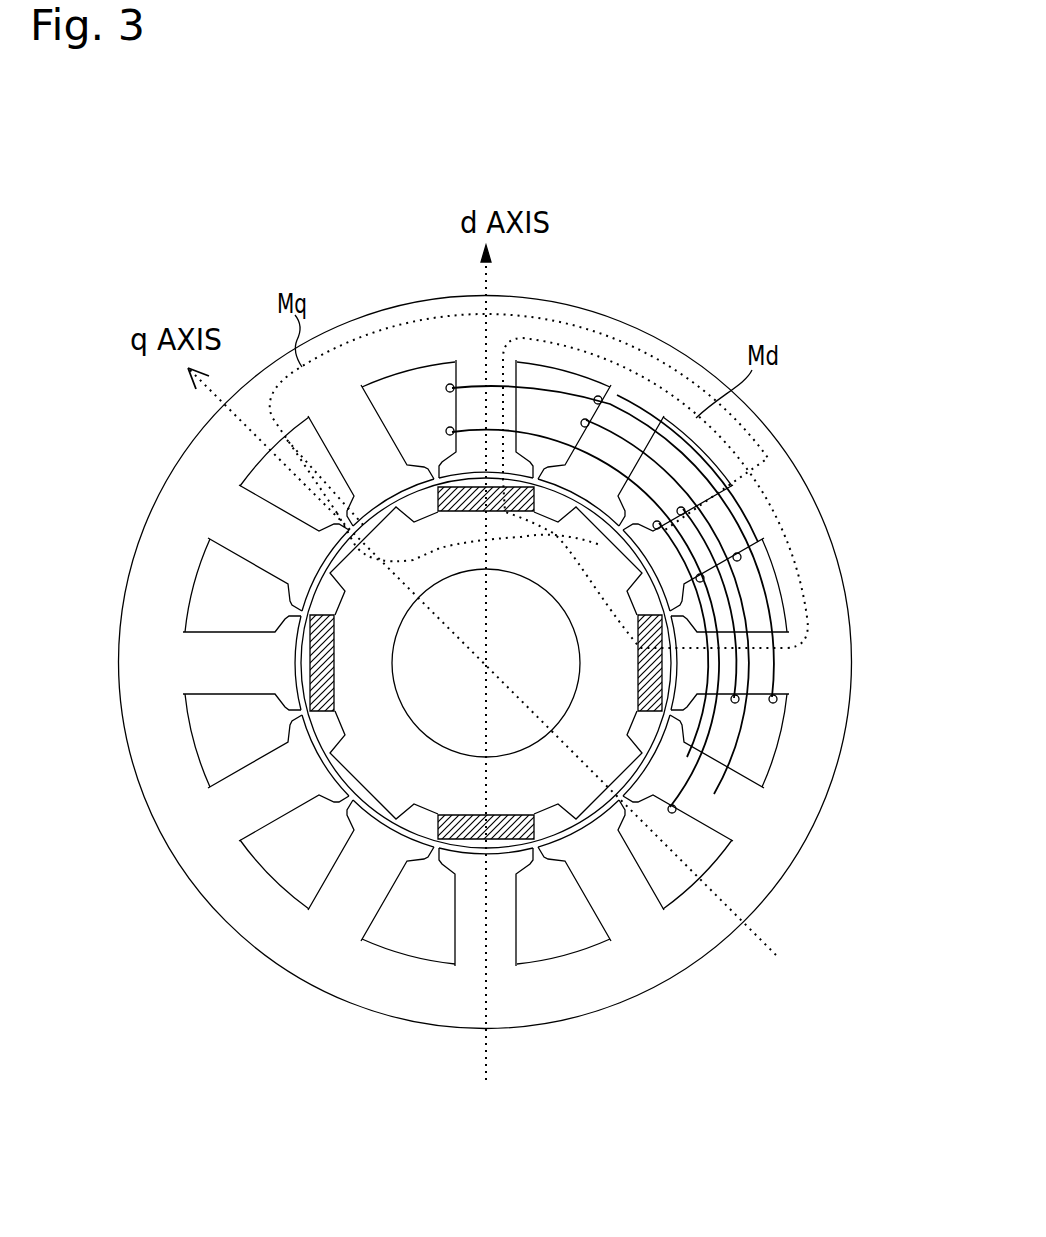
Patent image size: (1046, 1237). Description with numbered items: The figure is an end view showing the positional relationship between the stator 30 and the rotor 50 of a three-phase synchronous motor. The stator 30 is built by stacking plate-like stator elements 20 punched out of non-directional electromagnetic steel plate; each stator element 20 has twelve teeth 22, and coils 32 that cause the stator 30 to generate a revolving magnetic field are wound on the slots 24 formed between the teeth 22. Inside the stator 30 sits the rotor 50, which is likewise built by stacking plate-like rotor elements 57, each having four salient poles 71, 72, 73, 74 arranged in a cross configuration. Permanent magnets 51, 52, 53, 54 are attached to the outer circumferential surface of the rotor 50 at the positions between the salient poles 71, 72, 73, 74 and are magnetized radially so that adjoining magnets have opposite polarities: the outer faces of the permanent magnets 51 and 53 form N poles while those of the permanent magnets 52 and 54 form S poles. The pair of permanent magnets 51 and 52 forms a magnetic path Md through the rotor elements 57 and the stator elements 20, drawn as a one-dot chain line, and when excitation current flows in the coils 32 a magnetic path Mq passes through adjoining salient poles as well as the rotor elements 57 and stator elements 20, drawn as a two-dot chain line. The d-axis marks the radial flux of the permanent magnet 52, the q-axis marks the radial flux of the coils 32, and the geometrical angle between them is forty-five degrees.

The stator element 20 is at (469, 663).
The teeth 22 is at (247, 562).
The slots 24 is at (215, 612).
The stator 30 is at (684, 330).
The coils 32 is at (770, 586).
The rotor 50 is at (357, 718).
The permanent magnet 51 is at (470, 513).
The permanent magnet 52 is at (641, 633).
The permanent magnet 53 is at (521, 816).
The permanent magnet 54 is at (331, 632).
The rotor element 57 is at (361, 694).
The salient pole 71 is at (592, 534).
The salient pole 72 is at (628, 743).
The salient pole 73 is at (383, 790).
The salient pole 74 is at (360, 552).